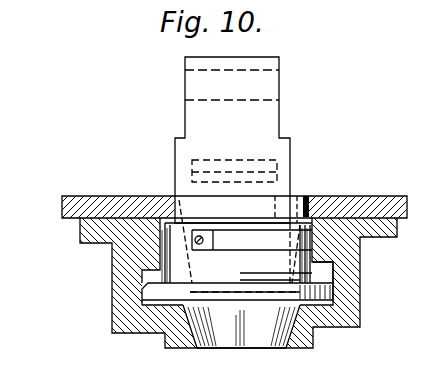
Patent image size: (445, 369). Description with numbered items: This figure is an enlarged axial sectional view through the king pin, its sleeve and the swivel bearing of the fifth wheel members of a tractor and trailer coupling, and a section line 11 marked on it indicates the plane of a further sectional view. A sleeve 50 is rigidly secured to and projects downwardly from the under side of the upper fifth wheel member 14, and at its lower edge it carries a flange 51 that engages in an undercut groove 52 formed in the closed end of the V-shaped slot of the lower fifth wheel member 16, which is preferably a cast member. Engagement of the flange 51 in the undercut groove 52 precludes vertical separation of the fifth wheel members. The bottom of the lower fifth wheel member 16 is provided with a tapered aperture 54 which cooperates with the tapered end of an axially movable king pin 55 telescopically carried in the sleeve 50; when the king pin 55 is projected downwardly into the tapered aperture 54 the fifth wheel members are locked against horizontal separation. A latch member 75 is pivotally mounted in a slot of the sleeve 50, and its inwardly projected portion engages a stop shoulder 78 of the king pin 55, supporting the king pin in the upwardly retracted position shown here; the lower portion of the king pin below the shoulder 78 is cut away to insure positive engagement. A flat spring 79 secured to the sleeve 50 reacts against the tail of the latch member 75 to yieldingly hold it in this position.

The section line 11 is at (80, 233).
The upper fifth wheel member 14 is at (361, 206).
The lower fifth wheel member 16 is at (345, 259).
The sleeve 50 is at (334, 263).
The flange 51 is at (334, 303).
The undercut groove 52 is at (336, 287).
The tapered aperture 54 is at (260, 335).
The king pin 55 is at (281, 144).
The latch member 75 is at (296, 227).
The stop shoulder 78 is at (304, 195).
The flat spring 79 is at (196, 252).